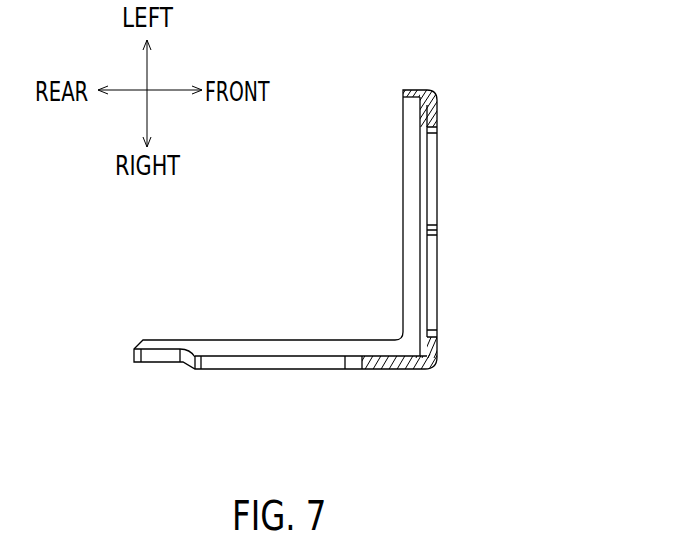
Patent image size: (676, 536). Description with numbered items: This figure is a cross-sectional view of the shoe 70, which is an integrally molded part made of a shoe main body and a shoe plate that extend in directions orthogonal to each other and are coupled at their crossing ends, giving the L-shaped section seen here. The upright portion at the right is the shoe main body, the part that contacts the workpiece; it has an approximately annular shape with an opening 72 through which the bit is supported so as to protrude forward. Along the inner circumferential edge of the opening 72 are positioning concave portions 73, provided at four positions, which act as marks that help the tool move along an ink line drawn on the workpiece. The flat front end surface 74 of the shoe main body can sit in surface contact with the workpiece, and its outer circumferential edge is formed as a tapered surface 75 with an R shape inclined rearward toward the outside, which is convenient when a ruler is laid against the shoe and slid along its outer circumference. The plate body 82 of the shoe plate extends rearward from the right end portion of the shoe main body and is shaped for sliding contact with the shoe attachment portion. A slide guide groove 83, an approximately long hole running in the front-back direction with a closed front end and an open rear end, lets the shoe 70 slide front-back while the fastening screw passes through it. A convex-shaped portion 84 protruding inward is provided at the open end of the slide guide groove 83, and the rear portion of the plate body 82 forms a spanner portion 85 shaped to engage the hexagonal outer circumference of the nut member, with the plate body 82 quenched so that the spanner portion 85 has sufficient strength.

The shoe 70 is at (438, 80).
The opening 72 is at (430, 192).
The positioning concave portion 73 is at (437, 128).
The front end surface 74 is at (437, 107).
The tapered surface 75 is at (412, 90).
The plate body 82 is at (392, 362).
The slide guide groove 83 is at (260, 362).
The convex-shaped portion 84 is at (195, 365).
The spanner portion 85 is at (163, 355).